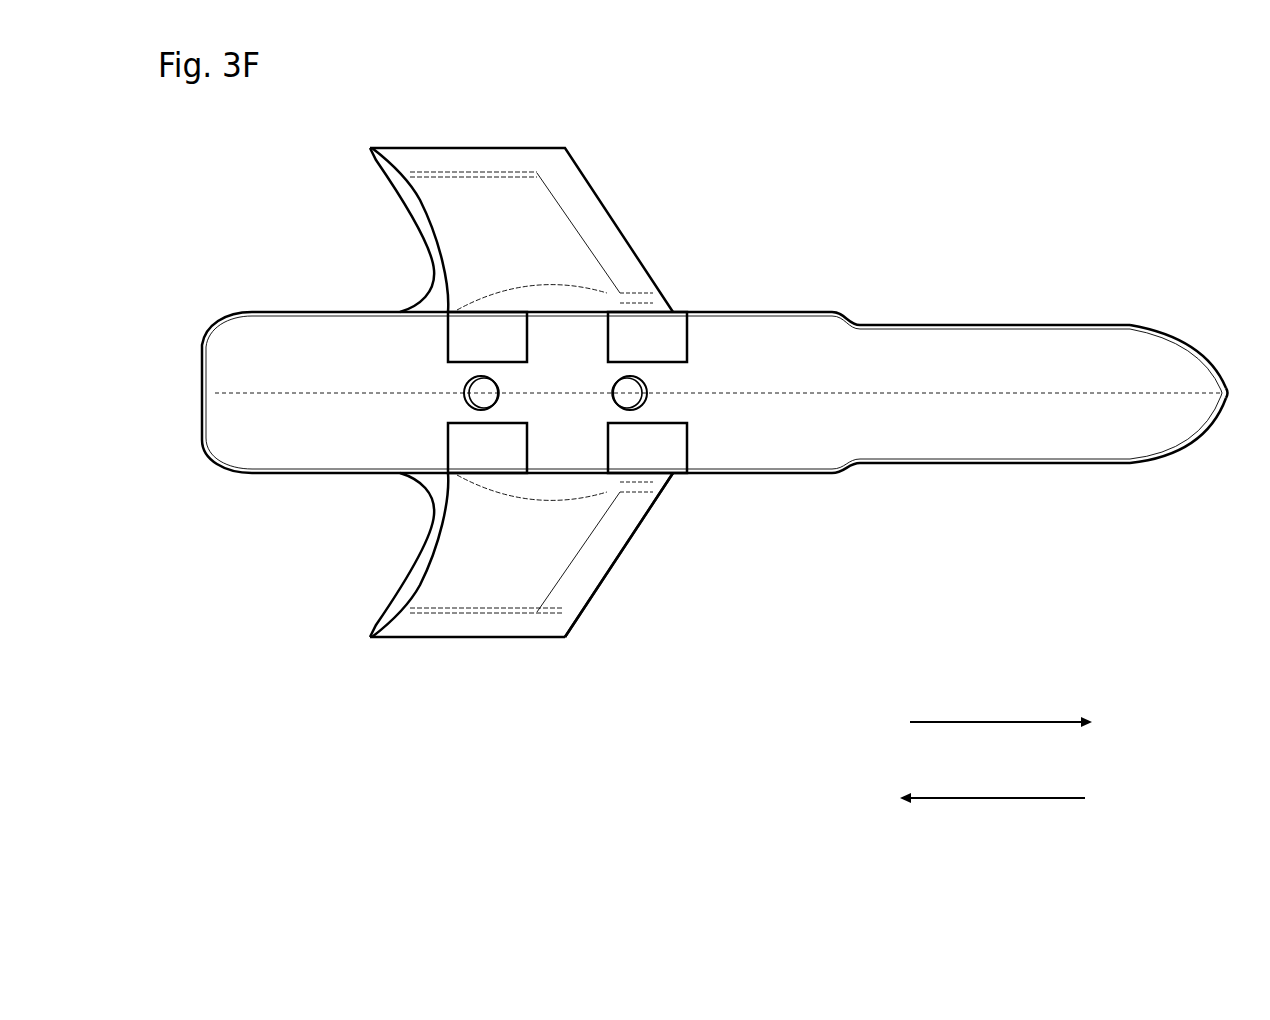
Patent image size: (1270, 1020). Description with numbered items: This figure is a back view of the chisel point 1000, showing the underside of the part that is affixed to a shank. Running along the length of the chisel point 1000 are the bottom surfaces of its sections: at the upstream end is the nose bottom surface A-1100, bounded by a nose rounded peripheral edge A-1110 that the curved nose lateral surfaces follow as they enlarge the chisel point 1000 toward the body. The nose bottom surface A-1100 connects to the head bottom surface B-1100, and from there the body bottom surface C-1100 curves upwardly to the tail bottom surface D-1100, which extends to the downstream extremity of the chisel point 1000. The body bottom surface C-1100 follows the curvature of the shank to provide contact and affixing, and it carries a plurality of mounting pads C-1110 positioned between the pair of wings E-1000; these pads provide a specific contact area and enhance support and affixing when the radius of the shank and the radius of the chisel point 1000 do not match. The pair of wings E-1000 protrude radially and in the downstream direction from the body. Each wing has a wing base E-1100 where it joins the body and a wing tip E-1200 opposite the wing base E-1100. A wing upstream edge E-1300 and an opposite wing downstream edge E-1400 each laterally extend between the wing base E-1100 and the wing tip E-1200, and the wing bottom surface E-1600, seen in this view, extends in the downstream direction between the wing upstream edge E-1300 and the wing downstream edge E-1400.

The chisel point 1000 is at (808, 243).
The nose bottom surface A-1100 is at (1190, 445).
The nose rounded peripheral edge A-1110 is at (1210, 428).
The head bottom surface B-1100 is at (997, 415).
The body bottom surface C-1100 is at (810, 420).
The mounting pads C-1110 is at (527, 338).
The tail bottom surface D-1100 is at (242, 427).
The pair of wings E-1000 is at (499, 636).
The wing base E-1100 is at (553, 470).
The wing tip E-1200 is at (422, 633).
The wing upstream edge E-1300 is at (642, 589).
The wing downstream edge E-1400 is at (373, 620).
The wing bottom surface E-1600 is at (523, 563).